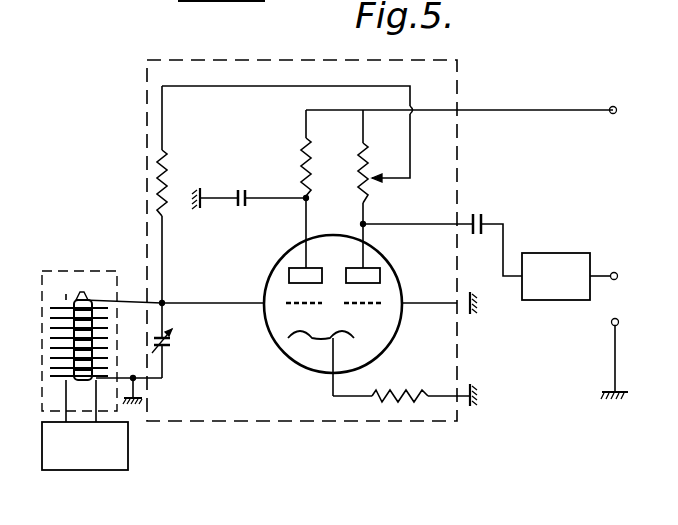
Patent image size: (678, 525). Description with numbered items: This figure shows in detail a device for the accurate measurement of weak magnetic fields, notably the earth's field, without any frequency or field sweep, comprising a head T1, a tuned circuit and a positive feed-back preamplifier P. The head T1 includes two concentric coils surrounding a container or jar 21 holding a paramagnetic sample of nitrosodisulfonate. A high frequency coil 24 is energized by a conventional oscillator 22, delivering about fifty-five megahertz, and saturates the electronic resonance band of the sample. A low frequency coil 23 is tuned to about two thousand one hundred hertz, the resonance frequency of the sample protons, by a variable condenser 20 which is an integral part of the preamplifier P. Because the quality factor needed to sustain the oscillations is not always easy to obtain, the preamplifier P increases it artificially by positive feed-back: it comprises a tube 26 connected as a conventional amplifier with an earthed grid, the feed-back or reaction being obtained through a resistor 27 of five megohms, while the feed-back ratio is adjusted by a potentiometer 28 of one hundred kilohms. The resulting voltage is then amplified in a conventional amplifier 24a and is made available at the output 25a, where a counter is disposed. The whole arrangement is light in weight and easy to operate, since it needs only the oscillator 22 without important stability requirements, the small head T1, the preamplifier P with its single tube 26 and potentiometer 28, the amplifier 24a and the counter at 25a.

The preamplifier P is at (248, 62).
The resistor 27 is at (170, 178).
The potentiometer 28 is at (363, 160).
The amplifier 24a is at (542, 265).
The output 25a is at (623, 344).
The head T1 is at (52, 275).
The container or jar 21 is at (82, 300).
The high frequency coil 24 is at (58, 318).
The low frequency coil 23 is at (58, 343).
The variable condenser 20 is at (175, 340).
The tube 26 is at (312, 345).
The oscillator 22 is at (128, 440).